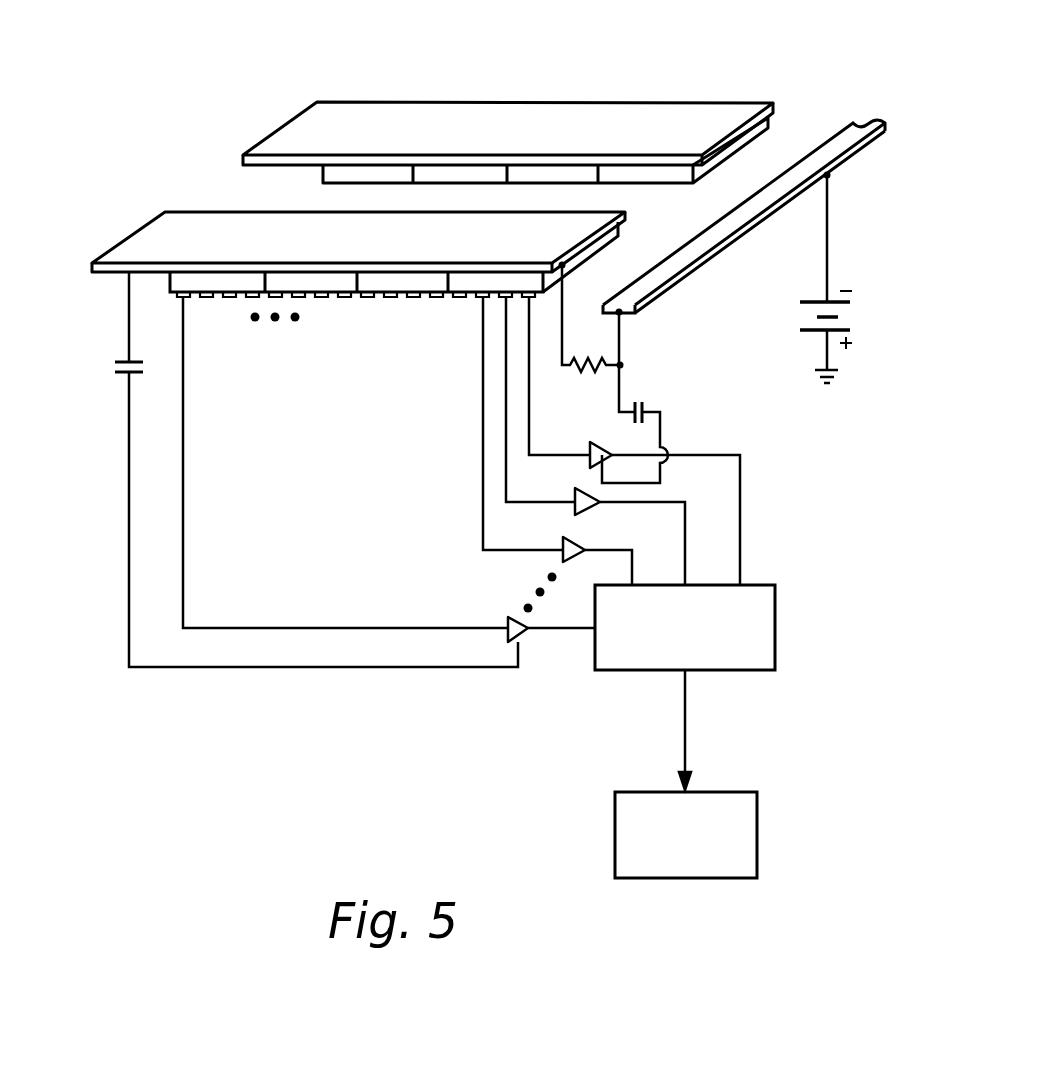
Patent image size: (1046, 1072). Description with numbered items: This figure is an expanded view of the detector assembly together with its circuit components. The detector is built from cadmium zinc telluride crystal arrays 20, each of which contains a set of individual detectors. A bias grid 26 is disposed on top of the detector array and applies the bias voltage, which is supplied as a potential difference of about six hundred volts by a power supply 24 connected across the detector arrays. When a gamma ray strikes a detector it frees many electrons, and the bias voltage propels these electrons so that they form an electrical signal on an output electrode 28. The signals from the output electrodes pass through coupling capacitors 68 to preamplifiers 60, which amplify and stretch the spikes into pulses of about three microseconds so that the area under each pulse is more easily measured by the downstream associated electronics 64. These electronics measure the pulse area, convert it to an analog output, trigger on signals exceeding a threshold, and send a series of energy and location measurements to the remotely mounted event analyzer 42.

The crystal arrays 20 is at (267, 258).
The power supply 24 is at (808, 318).
The bias grid 26 is at (513, 108).
The output electrode 28 is at (210, 297).
The event analyzer 42 is at (757, 832).
The preamplifiers 60 is at (592, 443).
The associated electronics 64 is at (777, 632).
The capacitor 68 is at (112, 373).